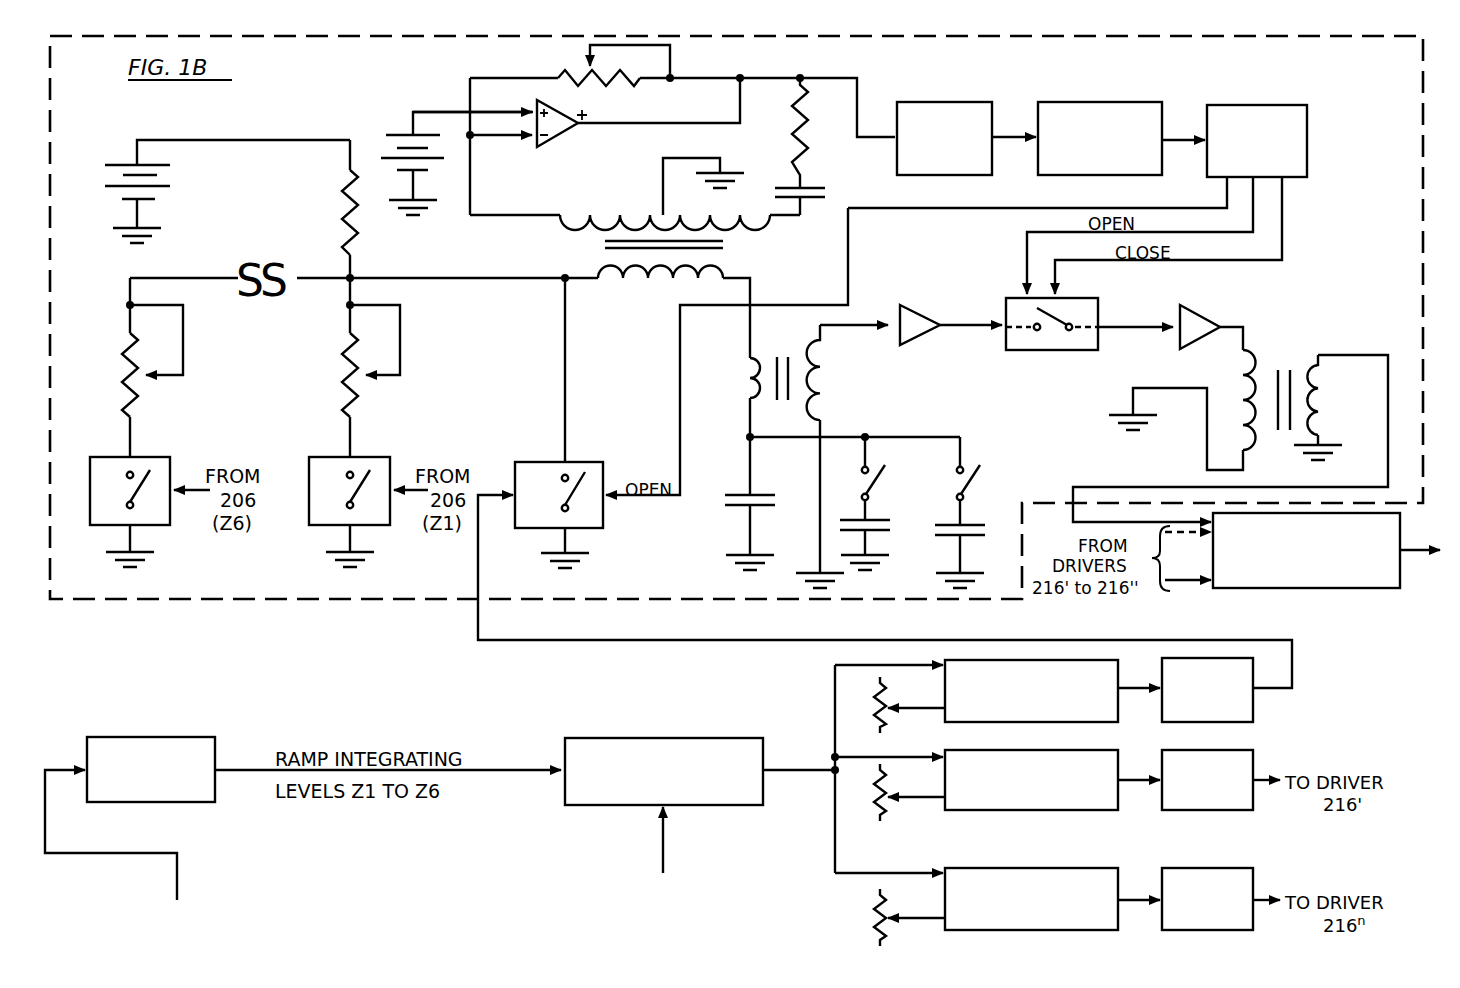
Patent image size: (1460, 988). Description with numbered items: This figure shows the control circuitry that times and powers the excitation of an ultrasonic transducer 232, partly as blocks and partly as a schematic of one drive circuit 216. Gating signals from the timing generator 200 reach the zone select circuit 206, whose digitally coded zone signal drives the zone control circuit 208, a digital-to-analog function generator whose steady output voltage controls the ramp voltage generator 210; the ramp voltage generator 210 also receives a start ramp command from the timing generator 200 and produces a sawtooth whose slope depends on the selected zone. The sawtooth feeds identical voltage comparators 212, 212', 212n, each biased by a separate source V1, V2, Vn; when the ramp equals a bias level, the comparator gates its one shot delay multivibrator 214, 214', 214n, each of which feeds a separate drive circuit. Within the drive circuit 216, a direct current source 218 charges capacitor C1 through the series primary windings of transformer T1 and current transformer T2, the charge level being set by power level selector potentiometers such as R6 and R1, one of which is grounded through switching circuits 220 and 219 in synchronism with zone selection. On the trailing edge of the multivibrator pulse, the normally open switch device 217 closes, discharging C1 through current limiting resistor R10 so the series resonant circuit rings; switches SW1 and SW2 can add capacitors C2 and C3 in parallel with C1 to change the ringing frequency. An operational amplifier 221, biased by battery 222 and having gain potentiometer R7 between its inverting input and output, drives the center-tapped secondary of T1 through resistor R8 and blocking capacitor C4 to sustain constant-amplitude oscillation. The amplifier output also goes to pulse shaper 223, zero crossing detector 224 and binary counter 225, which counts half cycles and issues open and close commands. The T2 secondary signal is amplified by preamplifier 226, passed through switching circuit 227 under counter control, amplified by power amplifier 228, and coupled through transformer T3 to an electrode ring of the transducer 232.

The direct current source 218 is at (165, 168).
The bias voltage source 222 is at (384, 133).
The operational amplifier 221 is at (560, 142).
The pulse shaping circuit 223 is at (915, 108).
The drive circuit 216 is at (1070, 80).
The zero crossing detector 224 is at (1107, 110).
The binary counter 225 is at (1233, 112).
The preamplifier 226 is at (902, 312).
The switching circuit 227 is at (1077, 302).
The power amplifier 228 is at (1198, 322).
The switching circuit 220 is at (158, 472).
The switching circuit 219 is at (376, 472).
The switch device 217 is at (587, 463).
The transducer 232 is at (1322, 580).
The zone control circuit 208 is at (181, 745).
The ramp voltage generator 210 is at (697, 747).
The voltage comparator circuit 212 is at (1053, 705).
The one shot delay multivibrator 214 is at (1245, 693).
The voltage comparator circuit 212' is at (1053, 798).
The one shot delay multivibrator 214' is at (1242, 775).
The voltage comparator circuit 212n is at (1087, 918).
The one shot delay multivibrator 214n is at (1242, 877).
The zone select circuit 206 is at (144, 858).
The timing generator 200 is at (611, 876).
The current limiting resistor R10 is at (342, 208).
The power level selector potentiometer R6 is at (124, 381).
The power level selector potentiometer R1 is at (344, 381).
The potentiometer R7 is at (615, 85).
The resistor R8 is at (791, 129).
The capacitor C4 is at (813, 190).
The capacitor C1 is at (743, 505).
The capacitor C2 is at (874, 530).
The capacitor C3 is at (968, 535).
The switch SW1 is at (893, 478).
The switch SW2 is at (989, 481).
The transformer T1 is at (635, 258).
The current transformer T2 is at (797, 456).
The transformer T3 is at (1230, 424).
The bias voltage source V1 is at (909, 705).
The bias voltage source V2 is at (909, 792).
The bias voltage source Vn is at (909, 917).